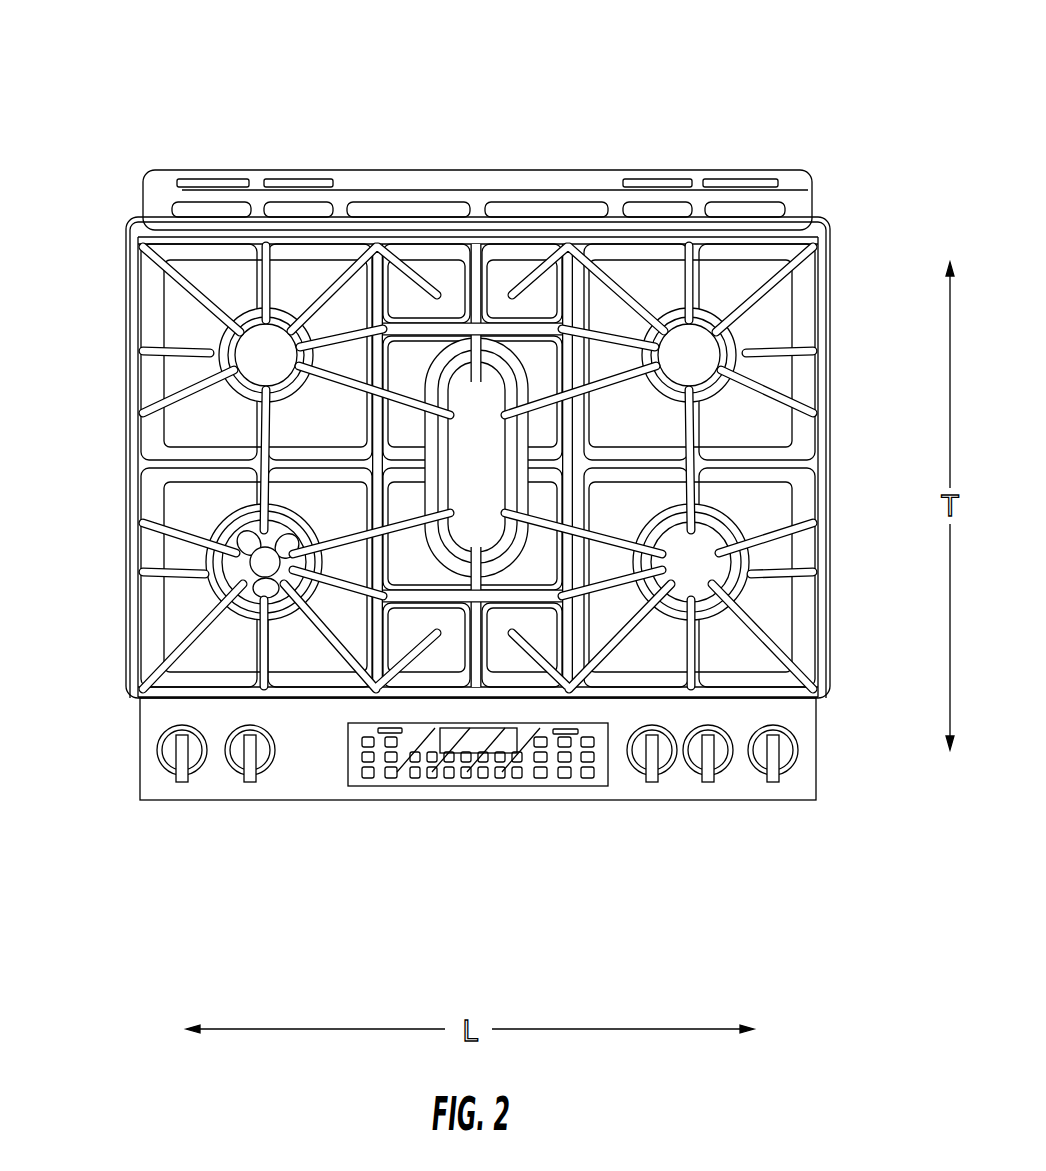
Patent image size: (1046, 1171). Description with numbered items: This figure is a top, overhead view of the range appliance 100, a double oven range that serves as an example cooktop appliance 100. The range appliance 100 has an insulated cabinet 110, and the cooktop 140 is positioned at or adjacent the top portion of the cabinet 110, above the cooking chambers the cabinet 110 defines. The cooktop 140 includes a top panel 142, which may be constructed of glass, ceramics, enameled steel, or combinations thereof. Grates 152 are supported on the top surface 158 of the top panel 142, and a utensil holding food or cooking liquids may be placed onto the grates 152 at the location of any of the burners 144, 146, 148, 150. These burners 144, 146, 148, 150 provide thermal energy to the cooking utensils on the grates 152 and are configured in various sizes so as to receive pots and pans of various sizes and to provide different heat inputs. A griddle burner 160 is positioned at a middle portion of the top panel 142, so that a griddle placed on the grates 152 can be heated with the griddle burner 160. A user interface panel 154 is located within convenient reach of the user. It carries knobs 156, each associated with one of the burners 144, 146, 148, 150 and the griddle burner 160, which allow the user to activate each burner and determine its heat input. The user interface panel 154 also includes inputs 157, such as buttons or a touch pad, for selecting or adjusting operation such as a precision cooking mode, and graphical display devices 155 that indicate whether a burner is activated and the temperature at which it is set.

The range appliance 100 is at (160, 100).
The insulated cabinet 110 is at (540, 185).
The cooktop 140 is at (829, 216).
The top panel 142 is at (802, 614).
The burner 144 is at (242, 356).
The burner 146 is at (247, 529).
The burner 148 is at (692, 352).
The burner 150 is at (714, 553).
The grates 152 is at (148, 578).
The user interface panel 154 is at (412, 785).
The graphical display devices 155 is at (447, 780).
The knobs 156 is at (230, 762).
The inputs 157 is at (388, 772).
The top surface 158 is at (160, 614).
The griddle burner 160 is at (488, 398).